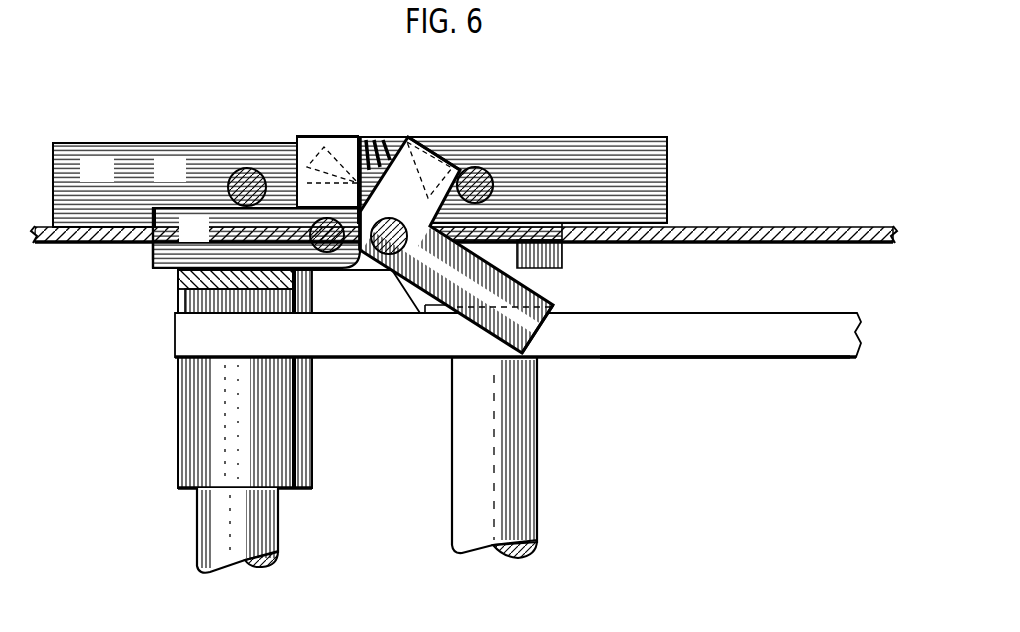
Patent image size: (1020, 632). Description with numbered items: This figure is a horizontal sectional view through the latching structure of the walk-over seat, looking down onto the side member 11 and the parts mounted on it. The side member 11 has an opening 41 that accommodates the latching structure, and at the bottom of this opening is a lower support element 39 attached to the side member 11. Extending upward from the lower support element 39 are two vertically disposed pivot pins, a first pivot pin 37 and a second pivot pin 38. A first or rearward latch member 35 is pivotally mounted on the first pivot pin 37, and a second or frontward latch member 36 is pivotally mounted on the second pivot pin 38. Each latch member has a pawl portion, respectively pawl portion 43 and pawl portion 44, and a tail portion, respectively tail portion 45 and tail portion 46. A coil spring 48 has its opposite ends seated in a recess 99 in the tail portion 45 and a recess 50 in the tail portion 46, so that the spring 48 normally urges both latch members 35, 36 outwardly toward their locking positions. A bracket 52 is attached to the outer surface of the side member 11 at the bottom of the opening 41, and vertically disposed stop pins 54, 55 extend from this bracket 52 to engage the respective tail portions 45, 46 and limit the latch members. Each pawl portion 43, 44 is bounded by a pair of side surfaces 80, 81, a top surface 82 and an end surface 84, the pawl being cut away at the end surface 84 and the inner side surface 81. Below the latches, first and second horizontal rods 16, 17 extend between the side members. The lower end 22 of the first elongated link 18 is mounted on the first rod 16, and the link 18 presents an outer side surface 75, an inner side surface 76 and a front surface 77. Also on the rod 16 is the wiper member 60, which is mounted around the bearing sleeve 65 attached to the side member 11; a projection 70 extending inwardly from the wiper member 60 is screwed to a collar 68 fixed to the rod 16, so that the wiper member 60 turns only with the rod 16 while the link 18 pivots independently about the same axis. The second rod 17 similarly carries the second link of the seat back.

The side member 11 is at (818, 227).
The first horizontal rod 16 is at (217, 525).
The second horizontal rod 17 is at (528, 435).
The first elongated link 18 is at (374, 347).
The lower end of first link 22 is at (178, 348).
The first or rearward latch member 35 is at (406, 281).
The second or frontward latch member 36 is at (167, 222).
The pivot pin 37 is at (408, 280).
The second pivot pin 38 is at (313, 233).
The lower support element 39 is at (565, 250).
The opening 41 is at (555, 222).
The pawl portion 43 is at (540, 338).
The pawl portion 44 is at (165, 270).
The tail portion 45 is at (461, 170).
The tail portion 46 is at (300, 136).
The coil spring 48 is at (385, 137).
The recess 50 is at (320, 133).
The bracket 52 is at (628, 143).
The stop pin 54 is at (494, 190).
The stop pin 55 is at (243, 178).
The wiper member 60 is at (197, 336).
The bearing sleeve 65 is at (298, 303).
The collar 68 is at (197, 430).
The projection 70 is at (308, 408).
The outer side surface 75 is at (732, 310).
The inner side surface 76 is at (750, 358).
The front surface 77 is at (808, 326).
The side surface 80 is at (203, 207).
The inner side surface 81 is at (178, 290).
The top surface 82 is at (204, 240).
The end surface 84 is at (152, 250).
The recess 99 is at (413, 137).